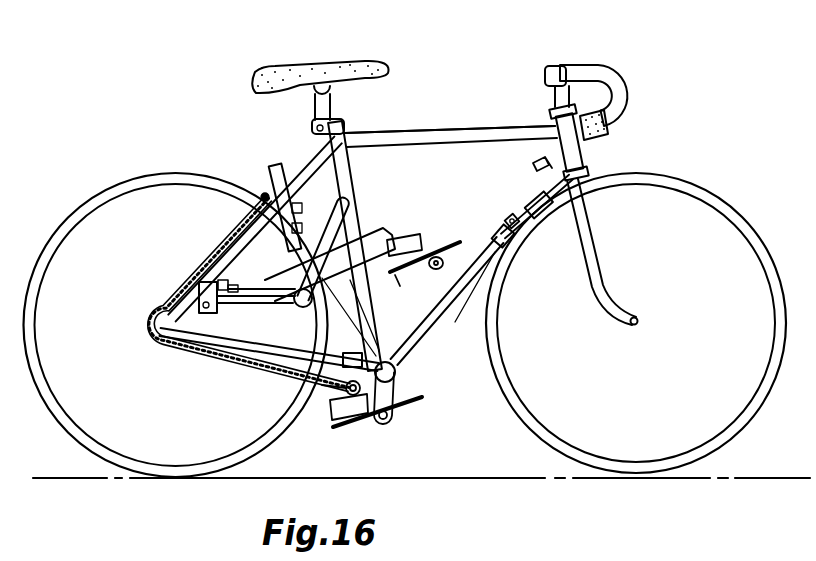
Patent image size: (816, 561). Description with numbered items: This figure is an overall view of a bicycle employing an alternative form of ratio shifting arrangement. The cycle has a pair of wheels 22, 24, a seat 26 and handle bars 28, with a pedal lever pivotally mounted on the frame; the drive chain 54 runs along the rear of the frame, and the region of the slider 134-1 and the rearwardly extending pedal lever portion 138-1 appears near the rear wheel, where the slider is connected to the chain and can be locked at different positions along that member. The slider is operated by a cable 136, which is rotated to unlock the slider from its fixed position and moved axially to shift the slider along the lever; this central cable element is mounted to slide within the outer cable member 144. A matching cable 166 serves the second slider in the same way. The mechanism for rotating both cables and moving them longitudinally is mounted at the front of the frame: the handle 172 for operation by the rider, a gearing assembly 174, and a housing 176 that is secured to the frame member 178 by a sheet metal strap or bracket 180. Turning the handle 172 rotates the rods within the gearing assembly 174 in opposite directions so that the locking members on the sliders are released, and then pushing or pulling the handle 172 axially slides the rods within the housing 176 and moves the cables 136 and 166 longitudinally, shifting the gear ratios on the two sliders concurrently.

The wheel 22 is at (176, 171).
The wheel 24 is at (670, 178).
The seat 26 is at (380, 66).
The handle bars 28 is at (603, 70).
The drive chain 54 is at (200, 355).
The upper sprocket 134-1 is at (262, 194).
The cable 136 is at (235, 278).
The bracket arm 138-1 is at (228, 306).
The outer cable member 144 is at (438, 340).
The matching cable 166 is at (305, 220).
The handle 172 is at (533, 165).
The gearing assembly 174 is at (528, 186).
The housing 176 is at (494, 230).
The frame member 178 is at (484, 100).
The sheet metal strap or bracket 180 is at (506, 216).